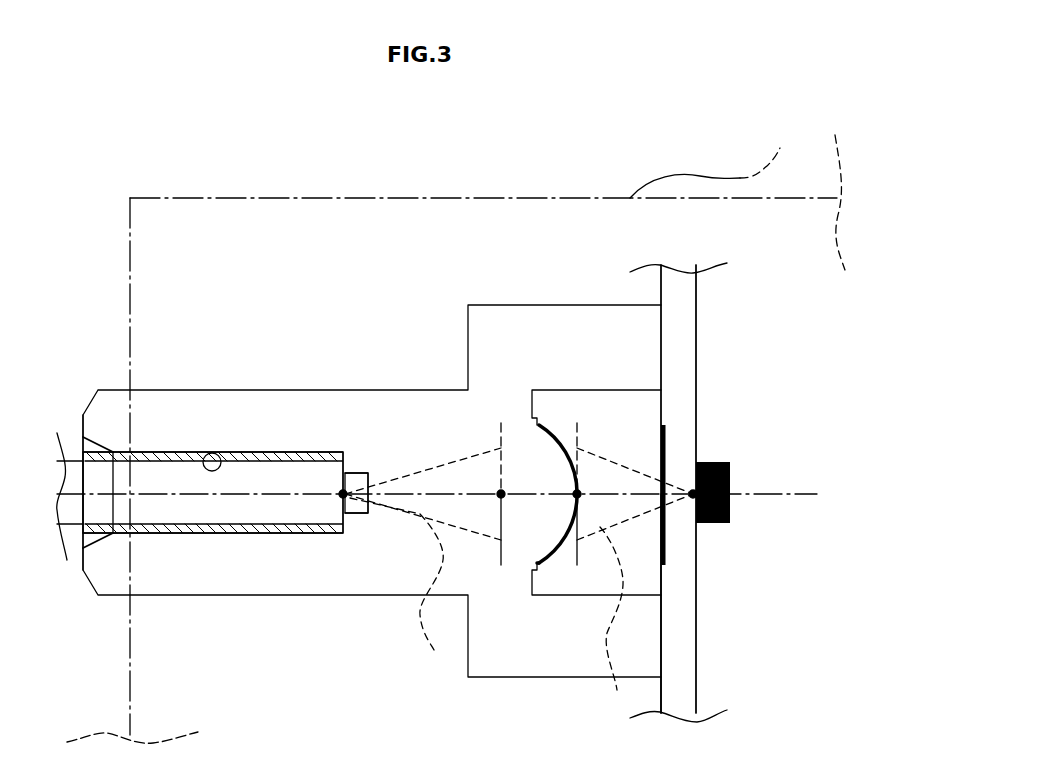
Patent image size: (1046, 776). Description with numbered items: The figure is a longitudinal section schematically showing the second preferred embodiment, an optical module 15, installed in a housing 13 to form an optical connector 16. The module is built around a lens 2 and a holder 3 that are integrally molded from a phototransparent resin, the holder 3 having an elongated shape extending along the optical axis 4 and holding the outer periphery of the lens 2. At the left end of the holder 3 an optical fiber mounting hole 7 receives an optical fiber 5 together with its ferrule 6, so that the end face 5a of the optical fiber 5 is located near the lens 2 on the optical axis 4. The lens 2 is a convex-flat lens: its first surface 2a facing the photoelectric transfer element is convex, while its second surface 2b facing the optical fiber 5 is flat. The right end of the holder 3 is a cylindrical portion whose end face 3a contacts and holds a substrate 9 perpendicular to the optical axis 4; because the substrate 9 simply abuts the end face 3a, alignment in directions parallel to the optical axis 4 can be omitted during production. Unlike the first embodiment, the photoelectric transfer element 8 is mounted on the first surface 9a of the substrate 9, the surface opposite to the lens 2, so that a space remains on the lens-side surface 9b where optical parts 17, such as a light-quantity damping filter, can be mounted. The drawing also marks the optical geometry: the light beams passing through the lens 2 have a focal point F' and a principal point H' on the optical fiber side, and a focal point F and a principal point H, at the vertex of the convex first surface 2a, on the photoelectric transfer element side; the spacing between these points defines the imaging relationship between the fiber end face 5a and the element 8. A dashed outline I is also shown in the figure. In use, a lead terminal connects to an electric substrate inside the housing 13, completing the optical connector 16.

The lens 2 is at (540, 424).
The first surface 2a is at (560, 432).
The second surface 2b is at (358, 472).
The holder 3 is at (158, 388).
The end face 3a is at (661, 337).
The optical axis 4 is at (773, 492).
The optical fiber 5 is at (197, 535).
The end face 5a is at (353, 514).
The ferrule 6 is at (263, 535).
The optical fiber mounting hole 7 is at (213, 455).
The photoelectric transfer element 8 is at (730, 520).
The substrate 9 is at (763, 678).
The first surface 9a is at (697, 375).
The surface 9b is at (645, 577).
The housing 13 is at (707, 164).
The optical module 15 is at (105, 388).
The optical connector 16 is at (122, 193).
The optical parts 17 is at (643, 443).
The focal point F is at (684, 527).
The focal point F' is at (309, 411).
The principal point H is at (600, 482).
The principal point H' is at (460, 446).
The image I is at (522, 620).